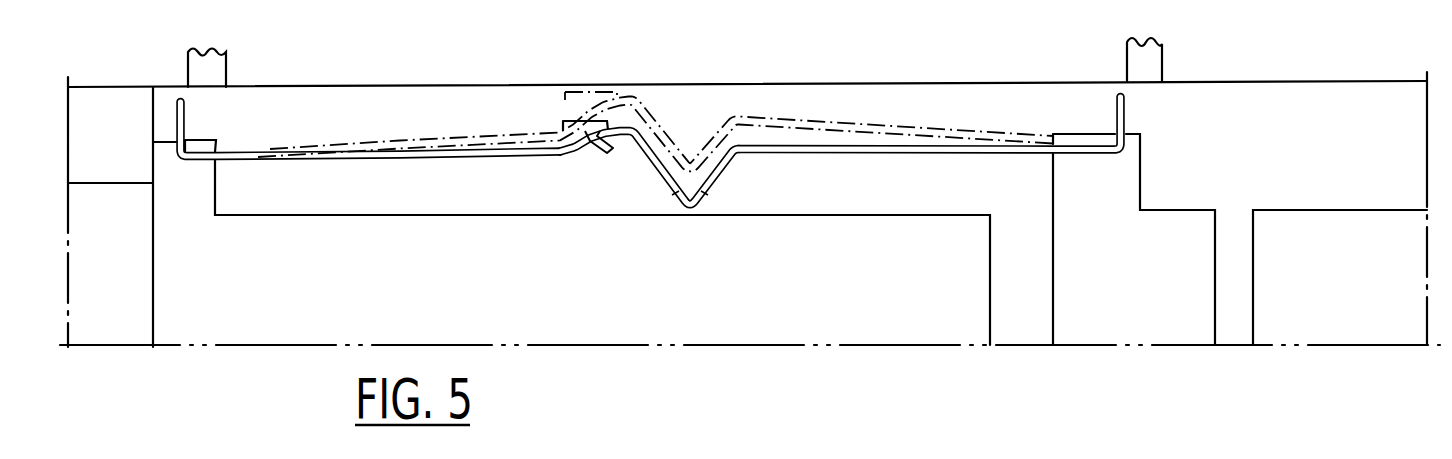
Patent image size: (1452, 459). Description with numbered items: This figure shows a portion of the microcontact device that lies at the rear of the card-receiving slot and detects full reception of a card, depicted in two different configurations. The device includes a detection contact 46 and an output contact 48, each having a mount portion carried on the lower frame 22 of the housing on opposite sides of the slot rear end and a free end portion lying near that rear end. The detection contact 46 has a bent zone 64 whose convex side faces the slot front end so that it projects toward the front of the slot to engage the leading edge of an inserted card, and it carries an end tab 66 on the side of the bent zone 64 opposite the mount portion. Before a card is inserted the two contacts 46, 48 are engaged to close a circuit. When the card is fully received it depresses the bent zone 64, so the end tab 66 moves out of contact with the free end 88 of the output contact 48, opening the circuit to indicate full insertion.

The frame 22 is at (770, 195).
The detection contact 46 is at (893, 152).
The output contact 48 is at (507, 156).
The bent zone 64 is at (651, 196).
The end tab 66 is at (616, 93).
The free end of the output contact 88 is at (595, 131).